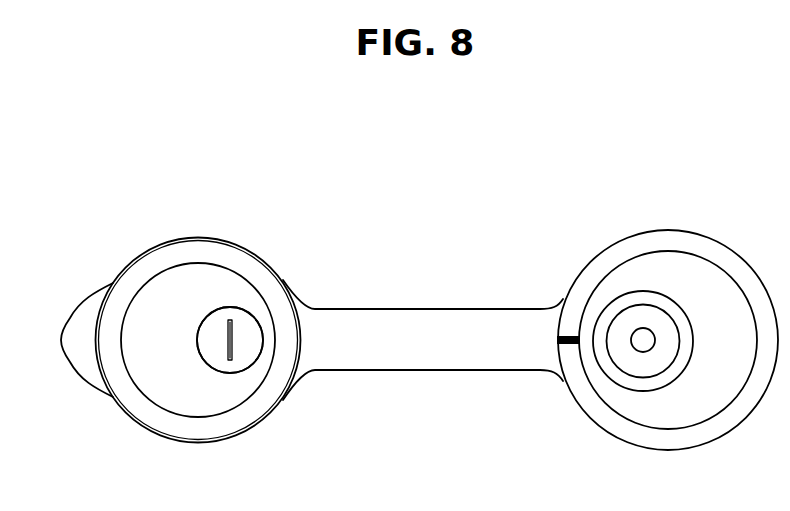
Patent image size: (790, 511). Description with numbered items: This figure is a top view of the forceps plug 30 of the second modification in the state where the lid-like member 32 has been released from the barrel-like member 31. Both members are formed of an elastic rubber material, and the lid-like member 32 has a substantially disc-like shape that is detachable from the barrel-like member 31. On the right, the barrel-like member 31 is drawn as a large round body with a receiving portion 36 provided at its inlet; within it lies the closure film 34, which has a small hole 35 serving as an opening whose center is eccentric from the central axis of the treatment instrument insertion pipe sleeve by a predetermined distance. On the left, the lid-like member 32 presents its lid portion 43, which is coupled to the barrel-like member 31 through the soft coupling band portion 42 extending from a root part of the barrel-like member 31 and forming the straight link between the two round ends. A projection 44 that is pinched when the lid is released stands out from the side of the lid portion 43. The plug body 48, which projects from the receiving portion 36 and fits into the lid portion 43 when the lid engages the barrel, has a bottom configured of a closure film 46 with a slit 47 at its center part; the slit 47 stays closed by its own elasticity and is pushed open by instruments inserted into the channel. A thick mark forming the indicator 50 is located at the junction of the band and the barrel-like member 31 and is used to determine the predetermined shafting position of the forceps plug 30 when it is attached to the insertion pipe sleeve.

The forceps plug 30 is at (432, 178).
The barrel-like member 31 is at (670, 230).
The lid-like member 32 is at (195, 237).
The closure film 34 is at (622, 358).
The small hole 35 is at (637, 366).
The receiving portion 36 is at (614, 268).
The soft coupling band portion 42 is at (414, 308).
The lid portion 43 is at (128, 273).
The projection 44 is at (77, 306).
The closure film 46 is at (246, 322).
The slit 47 is at (231, 362).
The plug body 48 is at (252, 368).
The indicator 50 is at (566, 331).